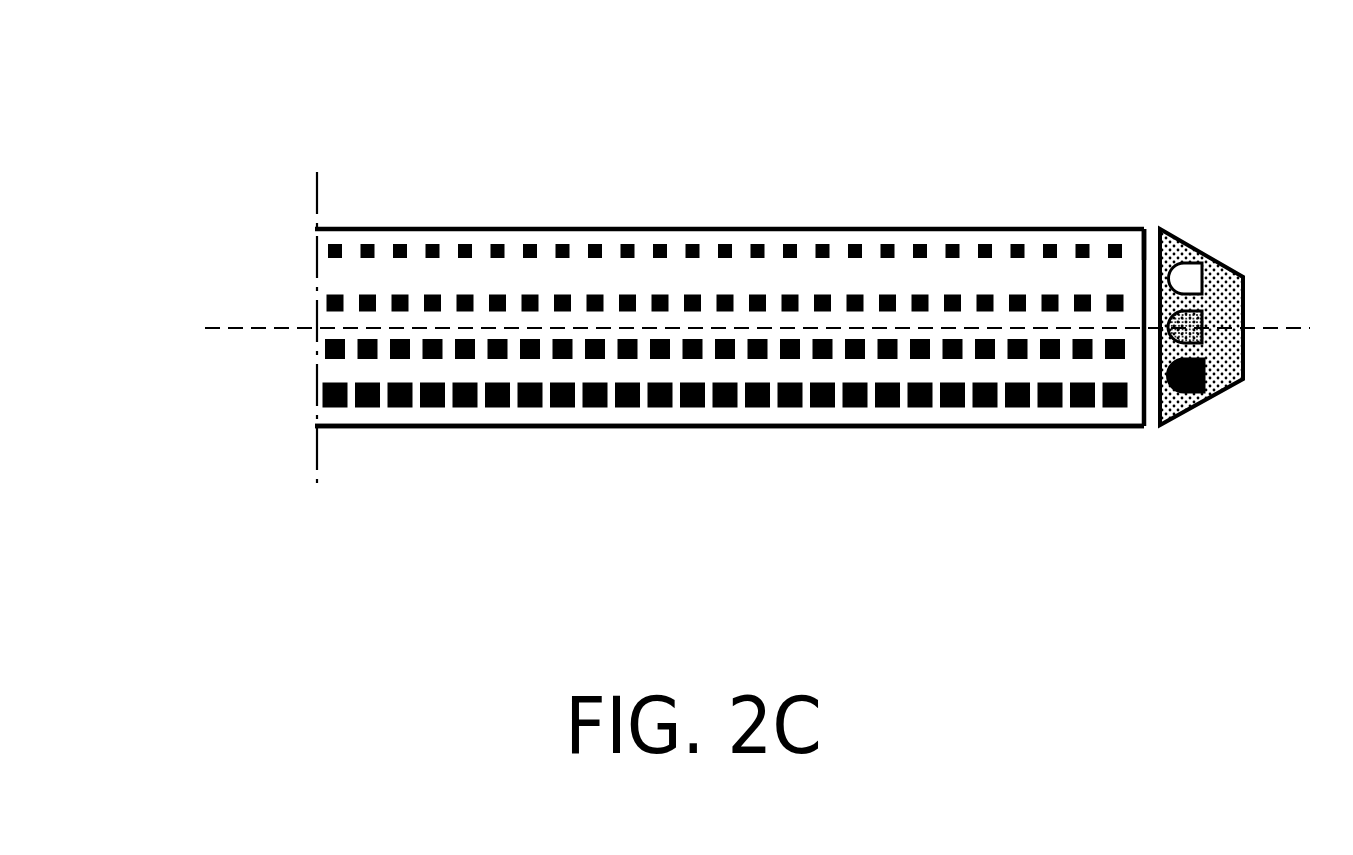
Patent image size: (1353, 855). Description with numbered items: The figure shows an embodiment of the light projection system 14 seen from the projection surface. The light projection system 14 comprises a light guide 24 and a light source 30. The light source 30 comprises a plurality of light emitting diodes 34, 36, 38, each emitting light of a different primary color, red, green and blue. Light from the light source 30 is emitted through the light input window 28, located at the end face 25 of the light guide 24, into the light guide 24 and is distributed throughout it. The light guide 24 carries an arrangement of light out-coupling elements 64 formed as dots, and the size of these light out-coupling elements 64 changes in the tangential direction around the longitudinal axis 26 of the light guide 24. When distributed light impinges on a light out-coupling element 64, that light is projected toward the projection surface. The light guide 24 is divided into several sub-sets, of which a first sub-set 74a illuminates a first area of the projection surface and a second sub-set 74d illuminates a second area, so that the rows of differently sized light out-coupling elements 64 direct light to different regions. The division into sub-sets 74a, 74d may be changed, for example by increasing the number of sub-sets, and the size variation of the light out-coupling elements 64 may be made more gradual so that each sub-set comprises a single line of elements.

The light projection system 14 is at (1022, 110).
The light guide 24 is at (672, 242).
The light input end face 25 is at (1144, 456).
The longitudinal axis 26 is at (227, 330).
The light input window 28 is at (1136, 240).
The light source 30 is at (1232, 287).
The light emitting diode 34 is at (1195, 259).
The light emitting diode 36 is at (1205, 330).
The light emitting diode 38 is at (1195, 397).
The light out-coupling elements 64 is at (822, 415).
The first sub-set 74a is at (289, 405).
The second sub-set 74d is at (289, 254).